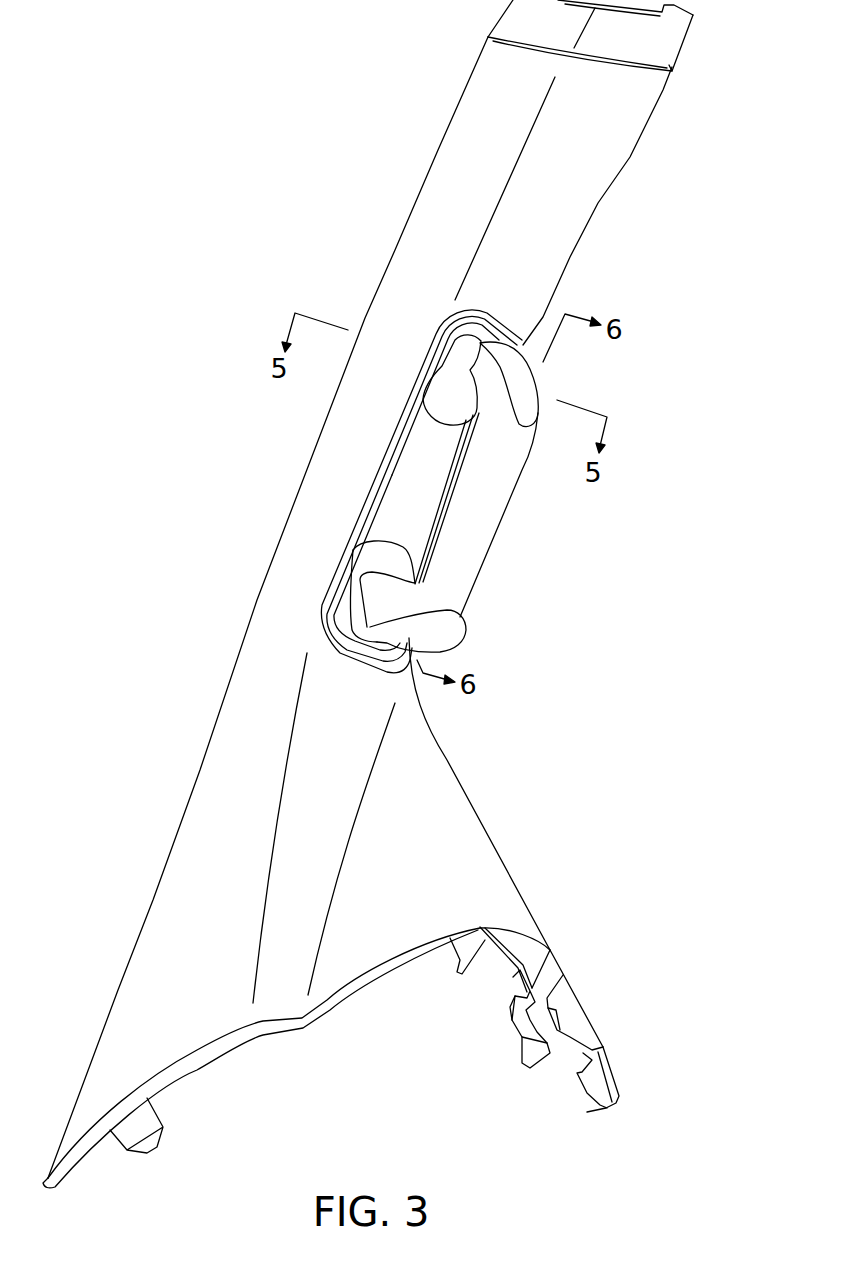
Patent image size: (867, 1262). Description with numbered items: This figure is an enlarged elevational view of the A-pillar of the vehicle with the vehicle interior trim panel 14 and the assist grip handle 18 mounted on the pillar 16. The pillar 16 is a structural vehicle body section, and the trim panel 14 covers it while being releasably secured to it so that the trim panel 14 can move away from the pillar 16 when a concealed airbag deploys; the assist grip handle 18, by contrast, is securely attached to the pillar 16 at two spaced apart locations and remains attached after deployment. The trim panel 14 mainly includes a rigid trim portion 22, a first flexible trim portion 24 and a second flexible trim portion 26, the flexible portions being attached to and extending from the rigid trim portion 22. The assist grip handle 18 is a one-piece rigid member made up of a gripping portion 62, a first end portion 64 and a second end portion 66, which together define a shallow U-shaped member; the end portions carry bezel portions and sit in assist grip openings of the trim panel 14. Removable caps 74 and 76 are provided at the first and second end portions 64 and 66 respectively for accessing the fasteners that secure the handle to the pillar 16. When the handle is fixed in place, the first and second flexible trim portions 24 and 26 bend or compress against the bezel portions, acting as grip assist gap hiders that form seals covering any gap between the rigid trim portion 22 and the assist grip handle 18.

The vehicle interior trim panel 14 is at (598, 203).
The pillar 16 is at (682, 42).
The assist grip handle 18 is at (503, 528).
The rigid trim portion 22 is at (313, 538).
The first flexible trim portion 24 is at (437, 414).
The second flexible trim portion 26 is at (334, 637).
The gripping portion 62 is at (467, 568).
The first end portion 64 is at (460, 369).
The second end portion 66 is at (363, 603).
The removable cap 74 is at (527, 388).
The removable cap 76 is at (433, 630).